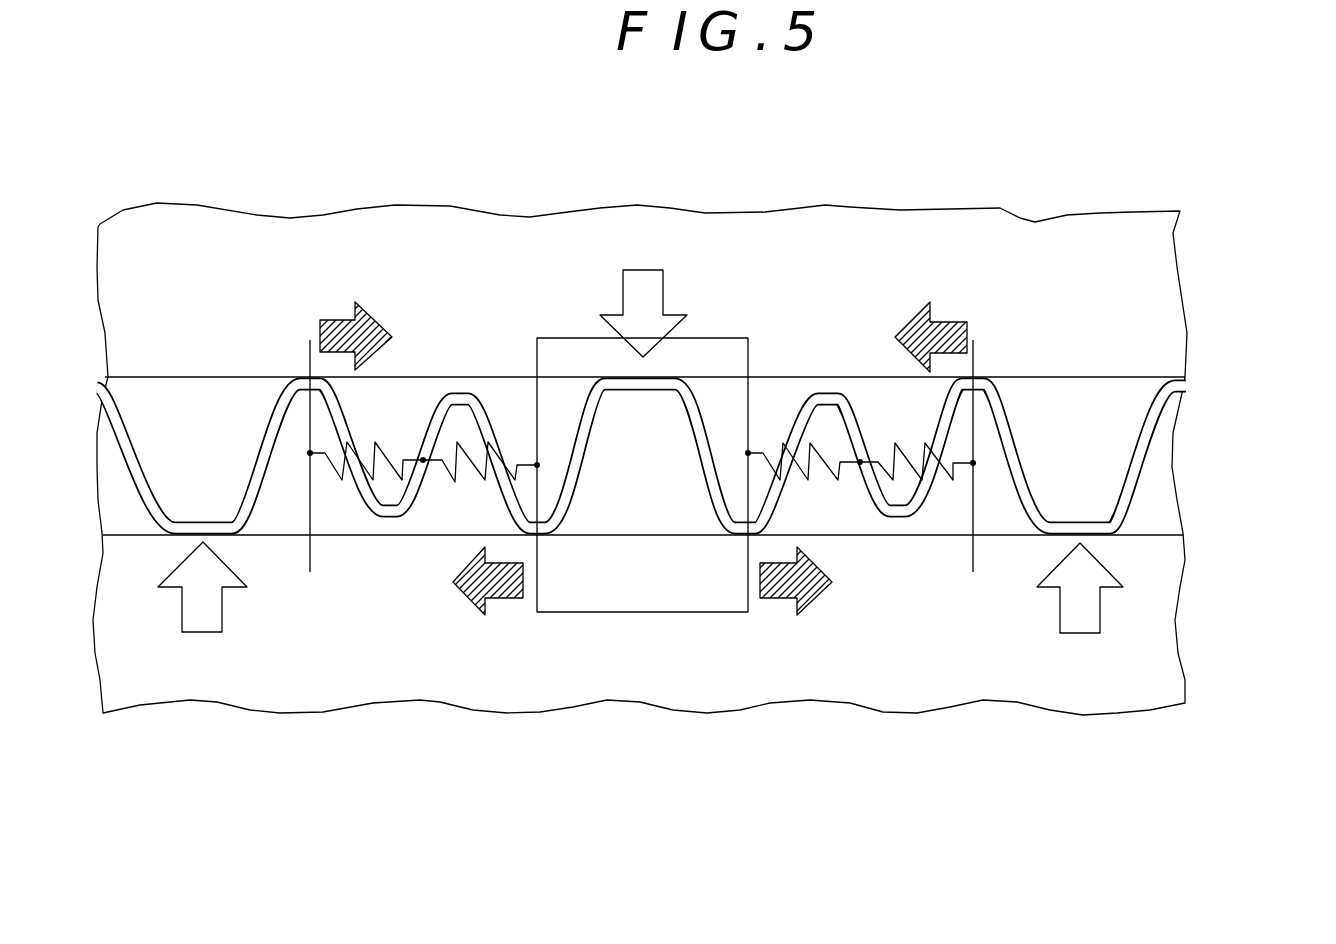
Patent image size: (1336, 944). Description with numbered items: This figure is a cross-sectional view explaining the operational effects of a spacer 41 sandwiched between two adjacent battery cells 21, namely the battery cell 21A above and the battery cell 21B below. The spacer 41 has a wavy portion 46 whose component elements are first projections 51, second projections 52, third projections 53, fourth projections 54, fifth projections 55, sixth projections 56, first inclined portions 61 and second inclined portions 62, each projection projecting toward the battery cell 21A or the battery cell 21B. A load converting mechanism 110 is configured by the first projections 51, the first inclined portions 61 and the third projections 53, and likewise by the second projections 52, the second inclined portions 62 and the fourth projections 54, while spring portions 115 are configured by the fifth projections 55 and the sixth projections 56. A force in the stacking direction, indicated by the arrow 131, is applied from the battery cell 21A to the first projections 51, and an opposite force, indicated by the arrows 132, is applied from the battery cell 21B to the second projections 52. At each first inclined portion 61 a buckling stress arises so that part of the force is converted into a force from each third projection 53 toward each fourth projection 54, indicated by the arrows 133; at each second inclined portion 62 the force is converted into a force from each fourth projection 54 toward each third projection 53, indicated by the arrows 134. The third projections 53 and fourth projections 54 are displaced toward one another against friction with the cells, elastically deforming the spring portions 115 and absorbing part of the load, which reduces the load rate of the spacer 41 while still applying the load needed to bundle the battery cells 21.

The battery cells 21 is at (709, 459).
The battery cell 21A is at (1148, 335).
The battery cell 21B is at (1147, 575).
The spacer 41 is at (702, 465).
The wavy portion 46 is at (641, 465).
The first projections 51 is at (653, 379).
The second projections 52 is at (214, 537).
The third projections 53 is at (539, 537).
The fourth projections 54 is at (302, 378).
The fifth projections 55 is at (460, 393).
The sixth projections 56 is at (387, 532).
The first inclined portions 61 is at (574, 441).
The second inclined portions 62 is at (250, 463).
The load converting mechanism 110 is at (640, 613).
The spring portions 115 is at (392, 527).
The arrow 131 is at (640, 270).
The arrows 132 is at (202, 632).
The arrows 133 is at (505, 598).
The arrows 134 is at (333, 320).